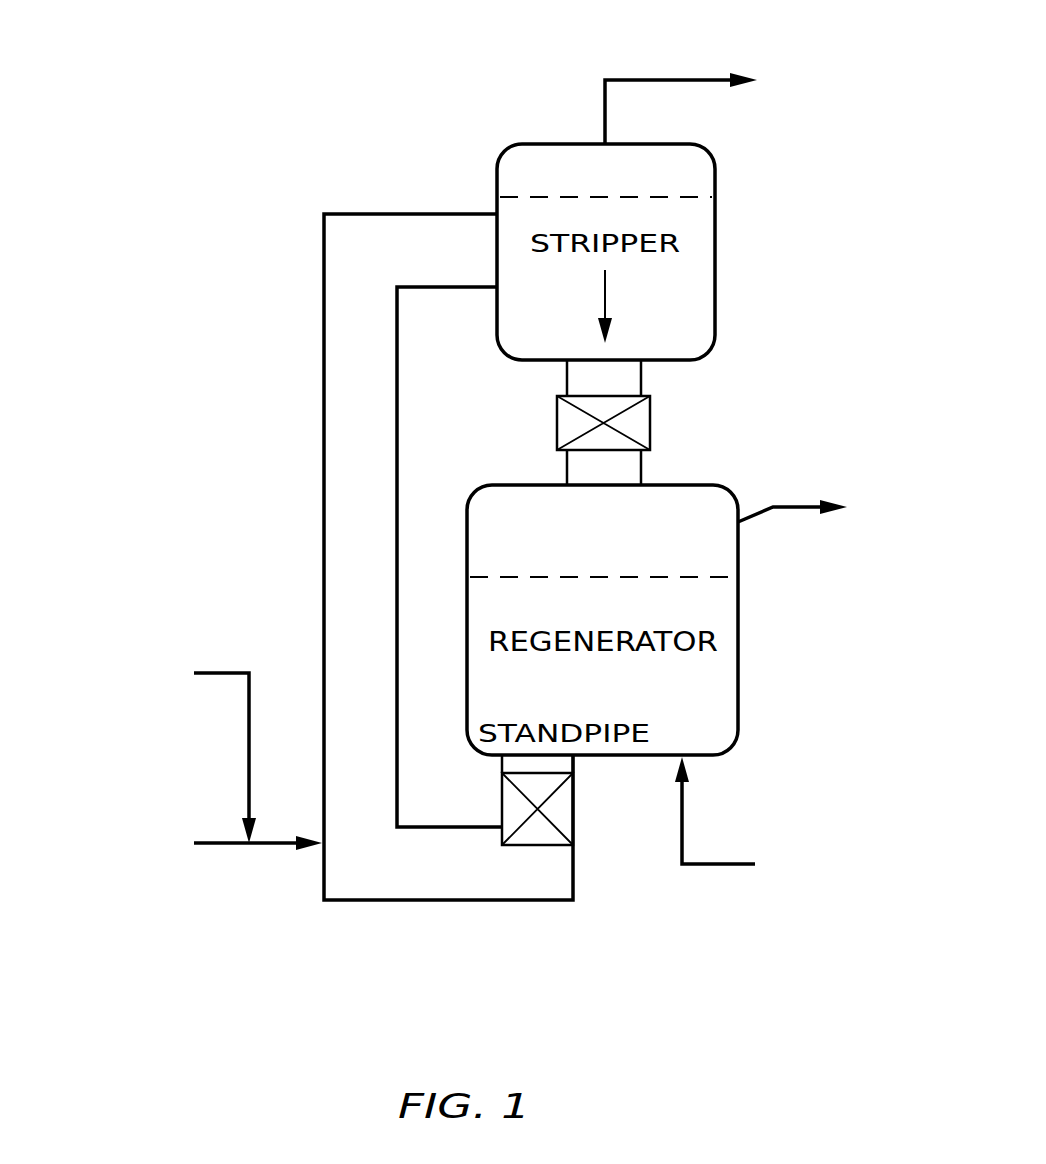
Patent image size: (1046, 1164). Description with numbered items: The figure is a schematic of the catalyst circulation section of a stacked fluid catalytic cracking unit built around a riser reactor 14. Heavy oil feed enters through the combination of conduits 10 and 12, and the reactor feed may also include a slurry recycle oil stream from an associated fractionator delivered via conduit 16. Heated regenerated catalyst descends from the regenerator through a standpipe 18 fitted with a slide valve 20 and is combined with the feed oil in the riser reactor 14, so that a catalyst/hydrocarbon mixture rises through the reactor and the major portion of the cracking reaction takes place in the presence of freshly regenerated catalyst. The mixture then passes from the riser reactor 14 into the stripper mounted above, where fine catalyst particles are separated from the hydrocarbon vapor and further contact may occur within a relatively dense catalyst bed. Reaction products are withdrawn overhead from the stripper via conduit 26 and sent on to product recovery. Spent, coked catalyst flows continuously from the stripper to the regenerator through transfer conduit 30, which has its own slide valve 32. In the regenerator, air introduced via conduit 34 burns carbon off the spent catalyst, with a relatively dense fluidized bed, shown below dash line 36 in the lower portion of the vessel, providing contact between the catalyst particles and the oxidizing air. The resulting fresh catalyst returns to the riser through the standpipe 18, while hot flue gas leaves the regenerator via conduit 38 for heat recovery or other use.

The conduit 10 is at (210, 848).
The conduit 12 is at (278, 848).
The riser reactor 14 is at (324, 389).
The conduit 16 is at (229, 672).
The standpipe 18 is at (575, 765).
The slide valve 20 is at (566, 823).
The conduit 26 is at (674, 78).
The transfer conduit 30 is at (642, 375).
The slide valve 32 is at (641, 430).
The conduit 34 is at (716, 866).
The dash line 36 is at (612, 197).
The conduit 38 is at (806, 505).